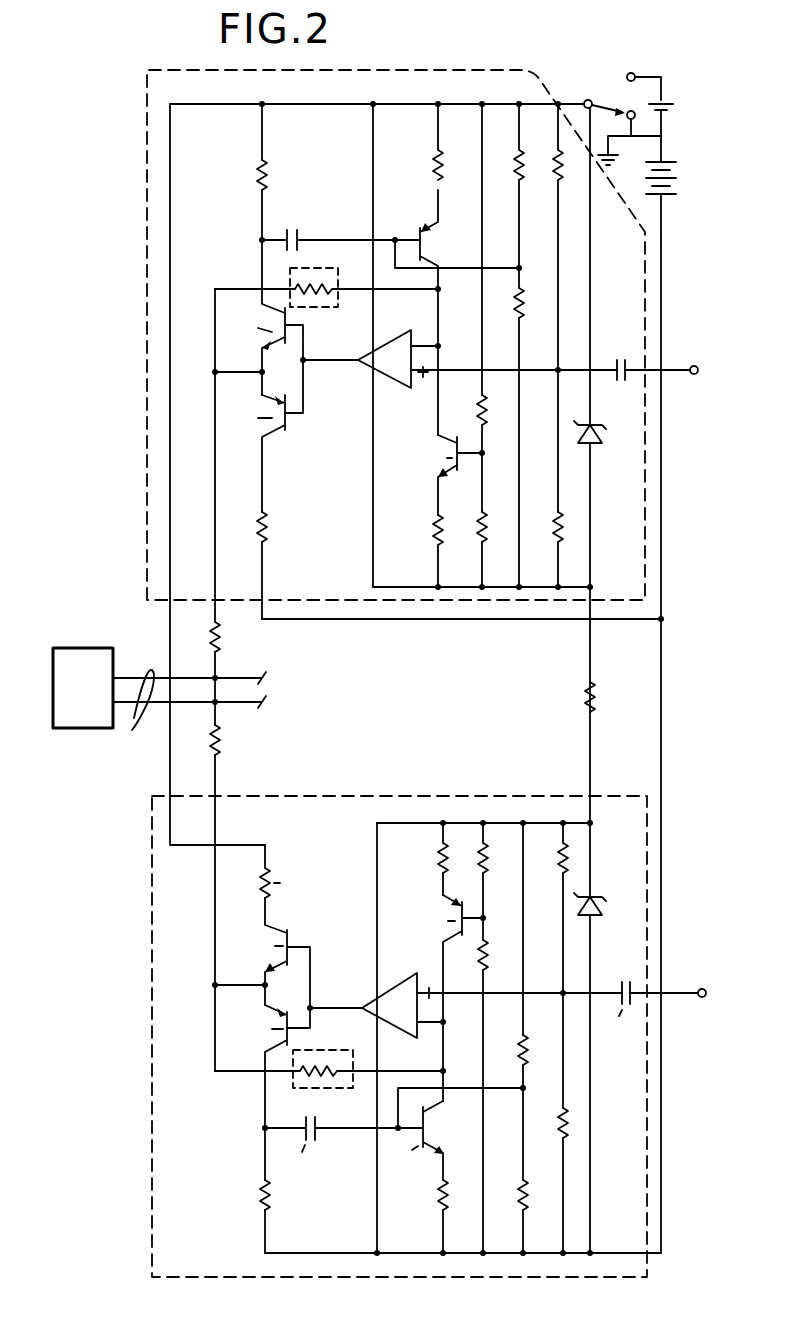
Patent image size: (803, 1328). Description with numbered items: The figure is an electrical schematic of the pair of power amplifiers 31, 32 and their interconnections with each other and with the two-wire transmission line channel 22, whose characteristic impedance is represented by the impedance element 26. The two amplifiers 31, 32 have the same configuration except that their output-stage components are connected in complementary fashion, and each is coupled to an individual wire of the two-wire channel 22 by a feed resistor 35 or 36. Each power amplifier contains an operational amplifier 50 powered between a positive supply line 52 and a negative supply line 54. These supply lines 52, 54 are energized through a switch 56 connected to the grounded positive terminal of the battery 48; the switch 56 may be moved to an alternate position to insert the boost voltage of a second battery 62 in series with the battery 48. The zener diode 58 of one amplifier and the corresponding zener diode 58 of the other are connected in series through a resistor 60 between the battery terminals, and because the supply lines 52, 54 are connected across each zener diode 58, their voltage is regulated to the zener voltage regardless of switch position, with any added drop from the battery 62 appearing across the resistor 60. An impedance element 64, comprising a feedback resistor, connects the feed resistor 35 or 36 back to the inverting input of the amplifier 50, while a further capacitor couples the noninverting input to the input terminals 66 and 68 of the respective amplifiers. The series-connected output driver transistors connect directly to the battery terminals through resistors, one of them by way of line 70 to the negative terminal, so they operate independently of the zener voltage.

The two-wire transmission line channel 22 is at (135, 713).
The impedance element 26 is at (88, 640).
The power amplifier 31 is at (145, 490).
The power amplifier 32 is at (150, 1130).
The resistor 35 is at (220, 638).
The resistor 36 is at (220, 741).
The battery 48 is at (680, 179).
The operational amplifier 50 is at (367, 368).
The positive supply line 52 is at (403, 104).
The negative supply line 54 is at (413, 587).
The switch 56 is at (592, 100).
The zener diode 58 is at (602, 436).
The resistor 60 is at (596, 696).
The battery 62 is at (670, 96).
The impedance element 64 is at (325, 310).
The input terminal 66 is at (666, 357).
The input terminal 68 is at (671, 979).
The line 70 is at (626, 622).